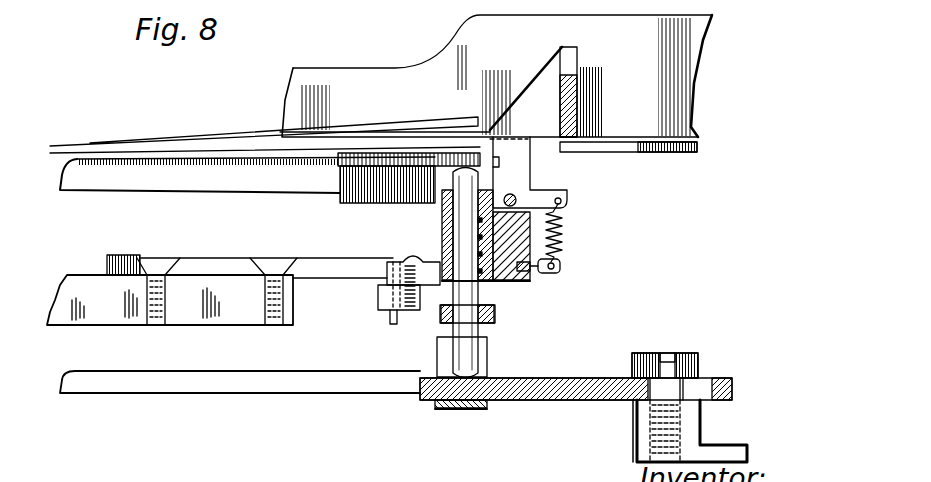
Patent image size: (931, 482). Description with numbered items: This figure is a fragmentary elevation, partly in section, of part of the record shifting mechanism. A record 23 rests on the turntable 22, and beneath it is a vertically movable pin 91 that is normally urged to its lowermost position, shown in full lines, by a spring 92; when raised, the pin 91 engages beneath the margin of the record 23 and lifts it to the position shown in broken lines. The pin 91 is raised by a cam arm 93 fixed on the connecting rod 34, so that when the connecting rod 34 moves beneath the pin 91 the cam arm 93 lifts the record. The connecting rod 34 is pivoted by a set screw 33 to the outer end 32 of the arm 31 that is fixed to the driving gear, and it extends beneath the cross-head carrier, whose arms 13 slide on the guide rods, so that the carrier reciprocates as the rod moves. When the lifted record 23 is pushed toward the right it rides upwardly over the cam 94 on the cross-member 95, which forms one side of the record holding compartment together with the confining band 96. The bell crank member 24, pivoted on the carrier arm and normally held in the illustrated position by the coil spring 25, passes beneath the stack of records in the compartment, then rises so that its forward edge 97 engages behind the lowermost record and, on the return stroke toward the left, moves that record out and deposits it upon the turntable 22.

The arms 13 is at (203, 318).
The turntable 22 is at (154, 190).
The record 23 is at (190, 155).
The bell crank member 24 is at (527, 178).
The coil spring 25 is at (560, 231).
The arm 31 is at (728, 450).
The outer end 32 is at (637, 417).
The set screw 33 is at (678, 356).
The connecting rod 34 is at (305, 376).
The vertically movable pin 91 is at (472, 290).
The spring 92 is at (478, 300).
The cam arm 93 is at (435, 403).
The cam 94 is at (520, 95).
The cross-member 95 is at (578, 97).
The confining band 96 is at (668, 42).
The forward edge 97 is at (517, 163).